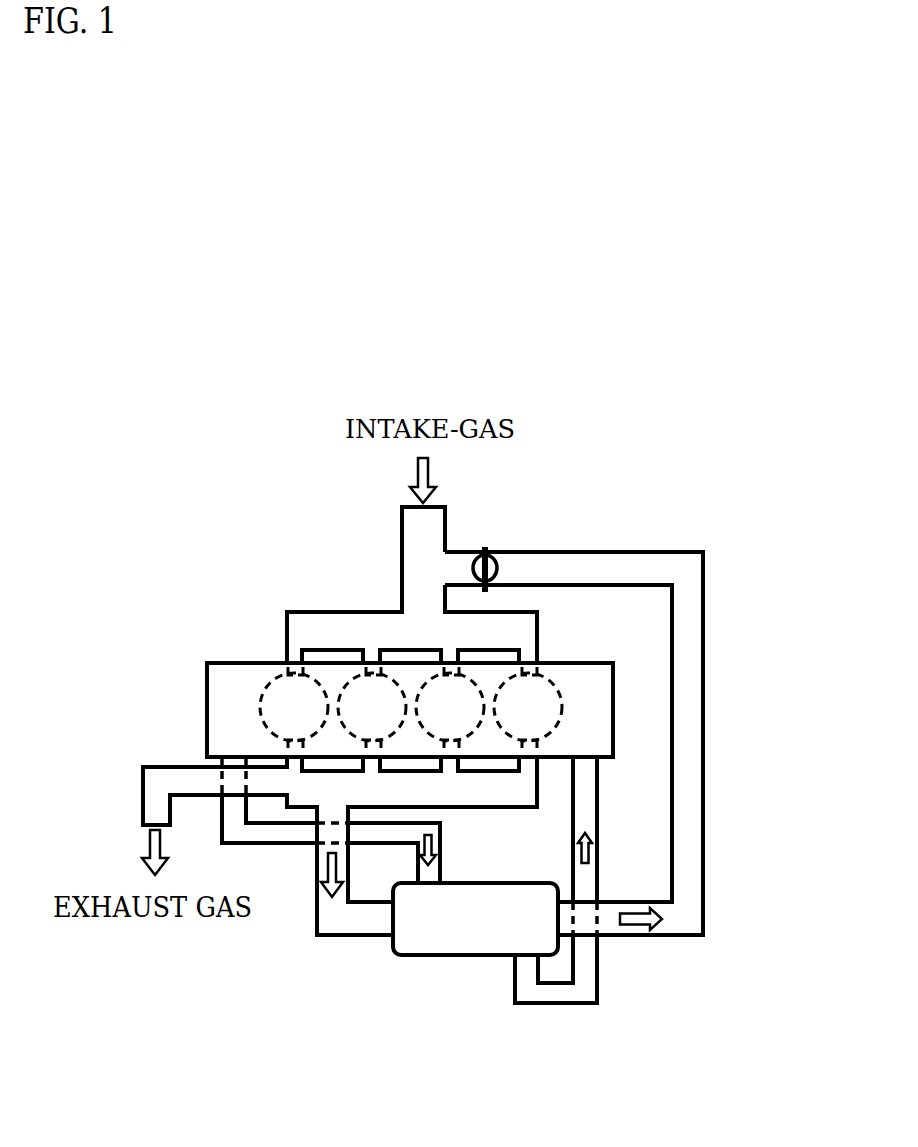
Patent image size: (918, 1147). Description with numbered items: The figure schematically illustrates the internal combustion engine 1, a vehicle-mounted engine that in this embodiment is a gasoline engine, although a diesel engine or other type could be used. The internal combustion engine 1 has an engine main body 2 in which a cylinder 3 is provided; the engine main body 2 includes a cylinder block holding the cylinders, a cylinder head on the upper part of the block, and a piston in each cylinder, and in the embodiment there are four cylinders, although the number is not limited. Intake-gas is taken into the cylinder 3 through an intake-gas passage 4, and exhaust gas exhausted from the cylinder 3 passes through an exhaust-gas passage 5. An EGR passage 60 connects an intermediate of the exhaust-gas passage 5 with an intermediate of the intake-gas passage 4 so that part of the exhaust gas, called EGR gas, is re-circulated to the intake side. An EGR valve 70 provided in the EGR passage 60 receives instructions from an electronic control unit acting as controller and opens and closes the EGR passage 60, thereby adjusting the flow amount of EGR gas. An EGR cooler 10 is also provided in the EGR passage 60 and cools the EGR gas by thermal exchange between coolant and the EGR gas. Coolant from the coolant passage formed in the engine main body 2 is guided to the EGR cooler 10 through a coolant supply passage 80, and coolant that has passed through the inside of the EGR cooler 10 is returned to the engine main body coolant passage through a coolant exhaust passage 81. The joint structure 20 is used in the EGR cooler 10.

The internal combustion engine 1 is at (105, 429).
The engine main body 2 is at (207, 697).
The cylinder 3 is at (353, 680).
The intake-gas passage 4 is at (398, 532).
The exhaust-gas passage 5 is at (143, 790).
The EGR cooler 10 is at (452, 969).
The joint structure 20 is at (465, 955).
The EGR passage 60 is at (703, 793).
The EGR valve 70 is at (487, 547).
The coolant supply passage 80 is at (442, 845).
The coolant exhaust passage 81 is at (550, 1003).